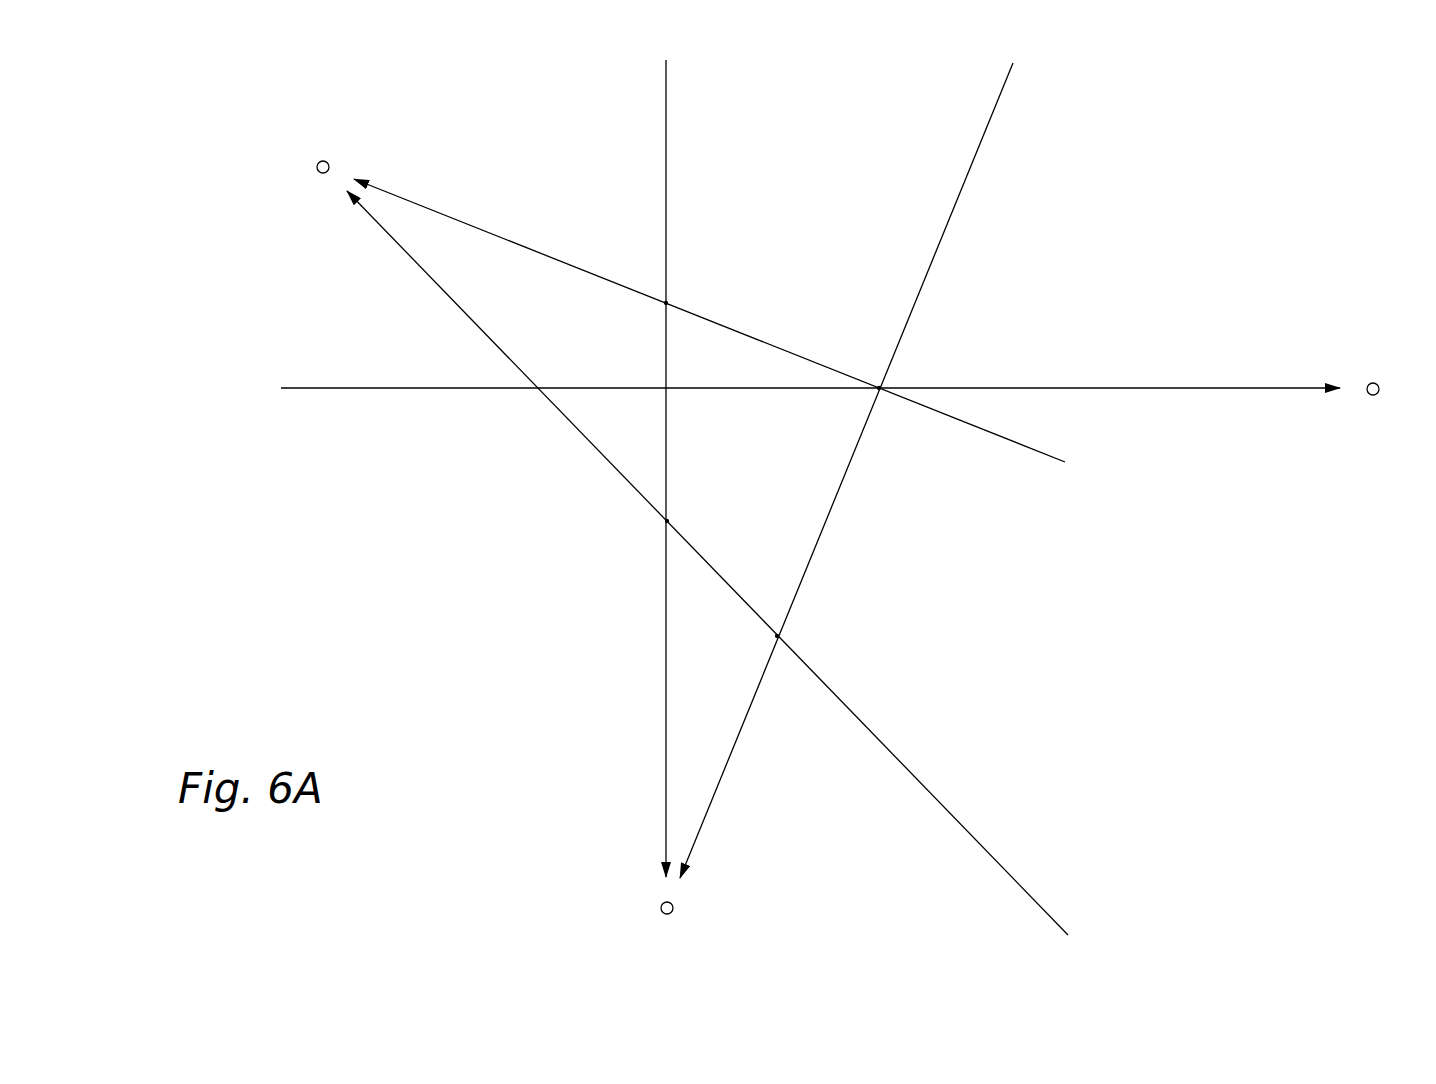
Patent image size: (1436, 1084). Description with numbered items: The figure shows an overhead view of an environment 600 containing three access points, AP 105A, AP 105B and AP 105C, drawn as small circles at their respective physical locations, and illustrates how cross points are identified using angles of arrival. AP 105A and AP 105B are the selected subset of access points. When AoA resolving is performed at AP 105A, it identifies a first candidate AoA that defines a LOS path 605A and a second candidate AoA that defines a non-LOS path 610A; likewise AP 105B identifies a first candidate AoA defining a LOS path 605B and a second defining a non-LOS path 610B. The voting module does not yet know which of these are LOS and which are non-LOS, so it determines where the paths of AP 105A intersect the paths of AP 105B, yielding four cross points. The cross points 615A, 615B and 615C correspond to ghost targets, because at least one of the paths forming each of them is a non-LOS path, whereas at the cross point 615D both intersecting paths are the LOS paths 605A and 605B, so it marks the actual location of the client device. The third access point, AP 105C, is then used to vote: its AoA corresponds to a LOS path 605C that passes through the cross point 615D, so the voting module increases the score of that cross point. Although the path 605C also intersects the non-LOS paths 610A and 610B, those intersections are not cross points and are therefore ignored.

The environment 600 is at (1278, 173).
The AP 105A is at (317, 164).
The AP 105B is at (661, 910).
The AP 105C is at (1373, 382).
The LOS path 605A is at (455, 219).
The LOS path 605B is at (722, 790).
The LOS path 605C is at (1218, 389).
The non-LOS path 610A is at (410, 257).
The non-LOS path 610B is at (664, 700).
The cross point 615A is at (668, 302).
The cross point 615B is at (665, 522).
The cross point 615C is at (779, 636).
The cross point 615D is at (882, 386).